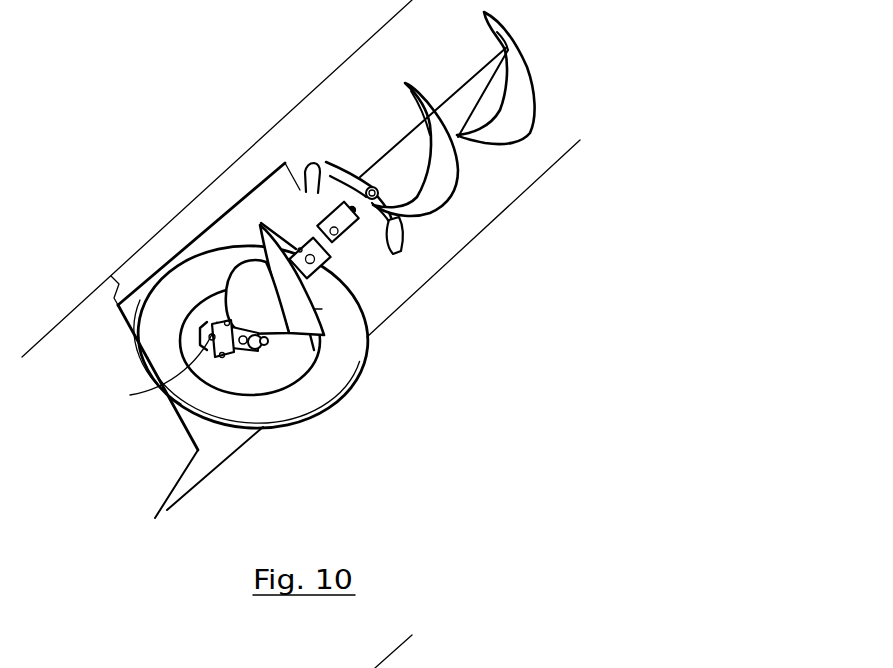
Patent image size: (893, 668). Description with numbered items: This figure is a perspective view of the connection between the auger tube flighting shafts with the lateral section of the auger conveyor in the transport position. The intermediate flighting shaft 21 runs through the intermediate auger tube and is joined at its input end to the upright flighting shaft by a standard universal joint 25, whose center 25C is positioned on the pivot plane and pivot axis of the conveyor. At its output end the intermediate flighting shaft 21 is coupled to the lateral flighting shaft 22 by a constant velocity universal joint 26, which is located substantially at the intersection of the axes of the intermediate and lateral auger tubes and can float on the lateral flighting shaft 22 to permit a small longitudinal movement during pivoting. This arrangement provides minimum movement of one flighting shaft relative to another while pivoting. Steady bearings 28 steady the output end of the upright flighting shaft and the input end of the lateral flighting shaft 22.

The intermediate flighting shaft 21 is at (367, 337).
The lateral flighting shaft 22 is at (473, 90).
The standard universal joint 25 is at (250, 350).
The center of the standard universal joint 25C is at (203, 342).
The constant velocity universal joint 26 is at (328, 245).
The steady bearings 28 is at (322, 199).